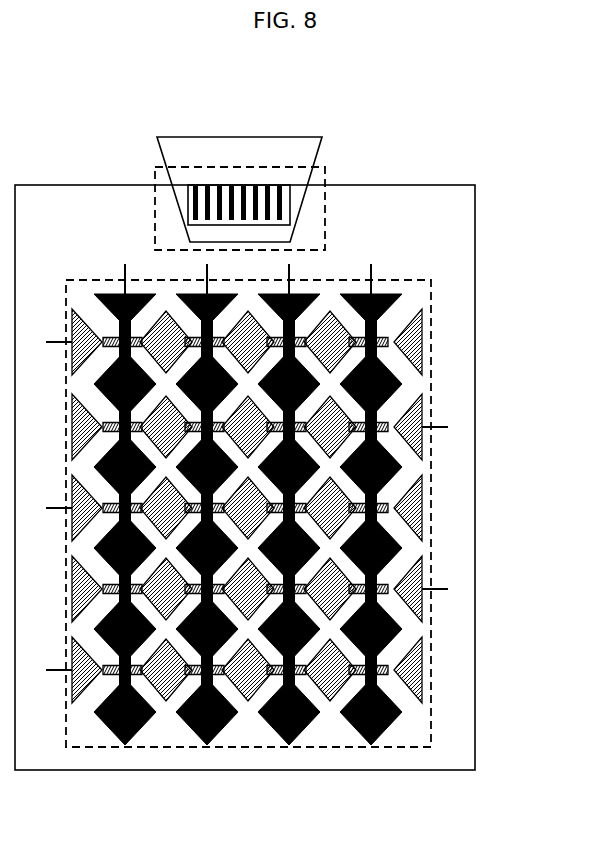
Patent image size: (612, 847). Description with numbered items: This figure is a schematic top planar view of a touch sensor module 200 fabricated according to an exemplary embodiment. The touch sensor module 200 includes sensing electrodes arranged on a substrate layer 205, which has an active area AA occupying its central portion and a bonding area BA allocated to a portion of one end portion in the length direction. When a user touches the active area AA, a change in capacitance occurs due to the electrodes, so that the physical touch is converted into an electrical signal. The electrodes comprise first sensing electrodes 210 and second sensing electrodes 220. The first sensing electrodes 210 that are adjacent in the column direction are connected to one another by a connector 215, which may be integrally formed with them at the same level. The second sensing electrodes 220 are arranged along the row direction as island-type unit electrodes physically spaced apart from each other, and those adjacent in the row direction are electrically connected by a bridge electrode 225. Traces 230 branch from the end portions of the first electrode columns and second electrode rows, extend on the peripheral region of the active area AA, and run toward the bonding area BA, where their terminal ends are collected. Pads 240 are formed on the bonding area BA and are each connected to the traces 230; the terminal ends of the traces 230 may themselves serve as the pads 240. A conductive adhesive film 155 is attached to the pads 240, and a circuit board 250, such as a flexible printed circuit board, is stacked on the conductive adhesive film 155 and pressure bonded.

The touch sensor module 200 is at (70, 145).
The substrate layer 205 is at (467, 748).
The first sensing electrodes 210 is at (113, 733).
The connector 215 is at (377, 680).
The second sensing electrodes 220 is at (163, 683).
The bridge electrode 225 is at (225, 687).
The traces 230 is at (374, 265).
The pads 240 is at (286, 163).
The circuit board 250 is at (183, 153).
The conductive adhesive film 155 is at (288, 210).
The bonding area BA is at (328, 222).
The active area AA is at (432, 493).